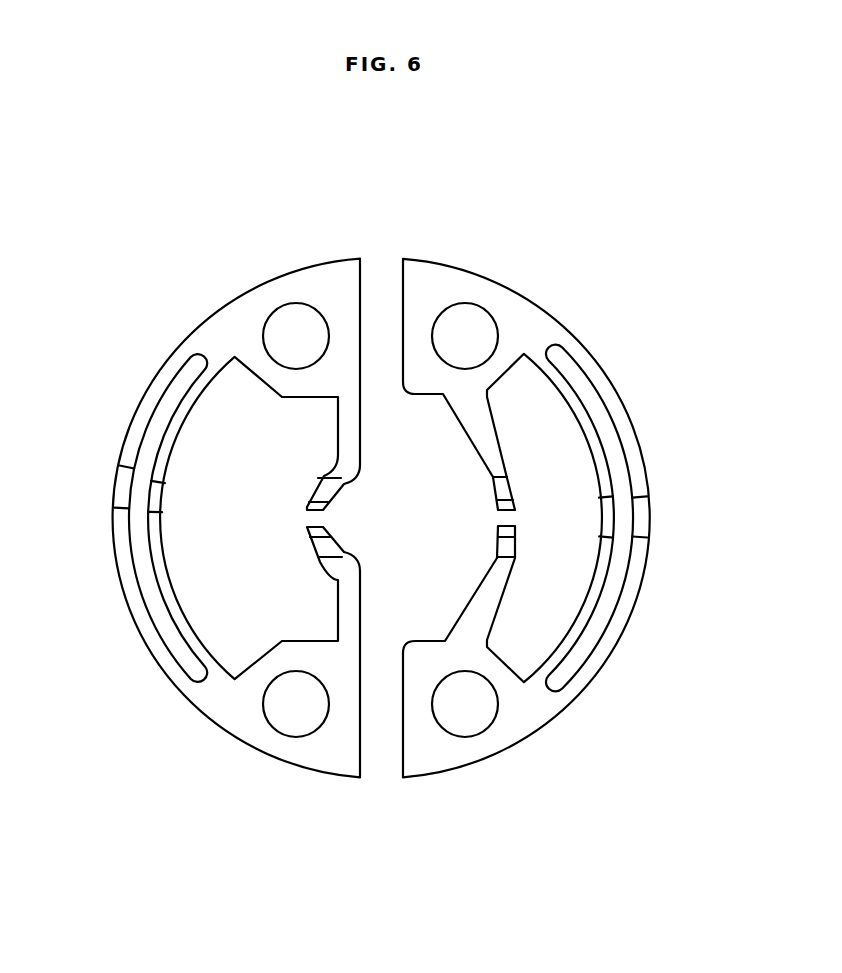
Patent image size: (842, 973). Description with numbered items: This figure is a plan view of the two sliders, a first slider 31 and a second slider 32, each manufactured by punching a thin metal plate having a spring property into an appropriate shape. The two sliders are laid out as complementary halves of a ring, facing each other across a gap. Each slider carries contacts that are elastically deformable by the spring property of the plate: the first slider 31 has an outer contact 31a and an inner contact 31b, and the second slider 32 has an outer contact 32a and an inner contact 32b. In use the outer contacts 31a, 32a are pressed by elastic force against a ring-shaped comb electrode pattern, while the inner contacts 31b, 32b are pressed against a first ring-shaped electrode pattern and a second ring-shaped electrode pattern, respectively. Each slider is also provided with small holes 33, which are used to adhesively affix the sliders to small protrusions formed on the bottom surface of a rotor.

The first slider 31 is at (233, 323).
The outer contact 31a is at (143, 483).
The inner contact 31b is at (305, 537).
The second slider 32 is at (528, 323).
The outer contact 32a is at (638, 520).
The inner contact 32b is at (498, 535).
The small holes 33 is at (458, 318).